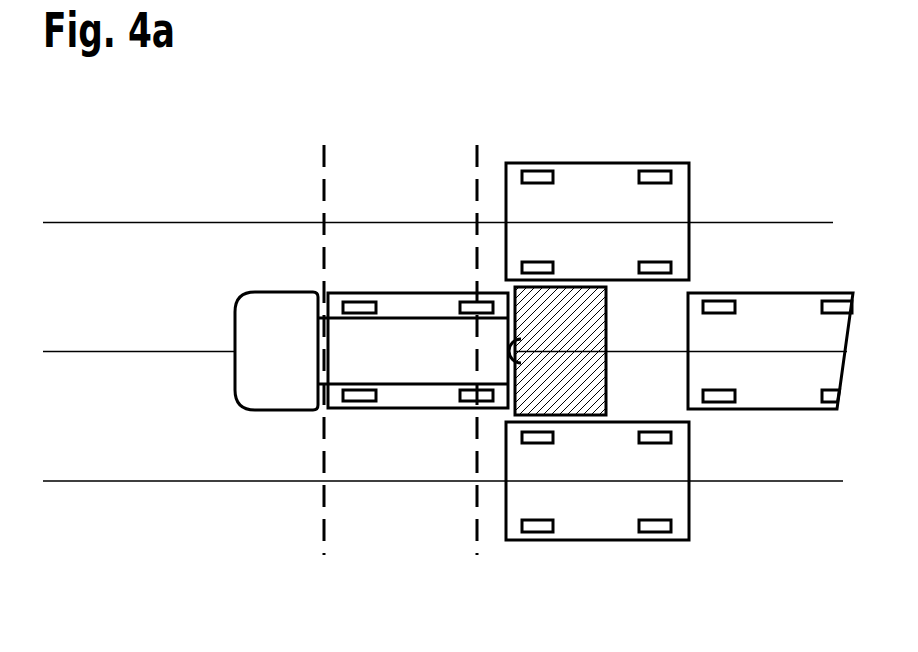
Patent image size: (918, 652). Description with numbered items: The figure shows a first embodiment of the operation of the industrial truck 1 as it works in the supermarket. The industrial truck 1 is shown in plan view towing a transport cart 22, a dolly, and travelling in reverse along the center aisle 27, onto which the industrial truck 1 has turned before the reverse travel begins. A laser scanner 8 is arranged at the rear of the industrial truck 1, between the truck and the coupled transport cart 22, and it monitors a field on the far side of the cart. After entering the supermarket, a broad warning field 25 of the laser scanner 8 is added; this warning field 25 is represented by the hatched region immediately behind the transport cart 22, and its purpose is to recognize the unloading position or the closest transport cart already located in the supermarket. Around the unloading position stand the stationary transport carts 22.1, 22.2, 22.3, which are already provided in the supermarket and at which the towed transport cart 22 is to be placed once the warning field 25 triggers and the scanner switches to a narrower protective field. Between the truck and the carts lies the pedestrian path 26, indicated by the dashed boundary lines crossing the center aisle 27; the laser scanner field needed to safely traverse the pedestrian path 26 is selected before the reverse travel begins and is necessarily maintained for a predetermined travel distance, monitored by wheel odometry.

The industrial truck 1 is at (291, 292).
The laser scanner 8 is at (521, 338).
The transport cart 22 is at (392, 402).
The stationary transport cart 22.1 is at (592, 178).
The stationary transport cart 22.2 is at (593, 523).
The stationary transport cart 22.3 is at (803, 400).
The warning field 25 is at (585, 385).
The pedestrian path 26 is at (385, 195).
The center aisle 27 is at (175, 351).